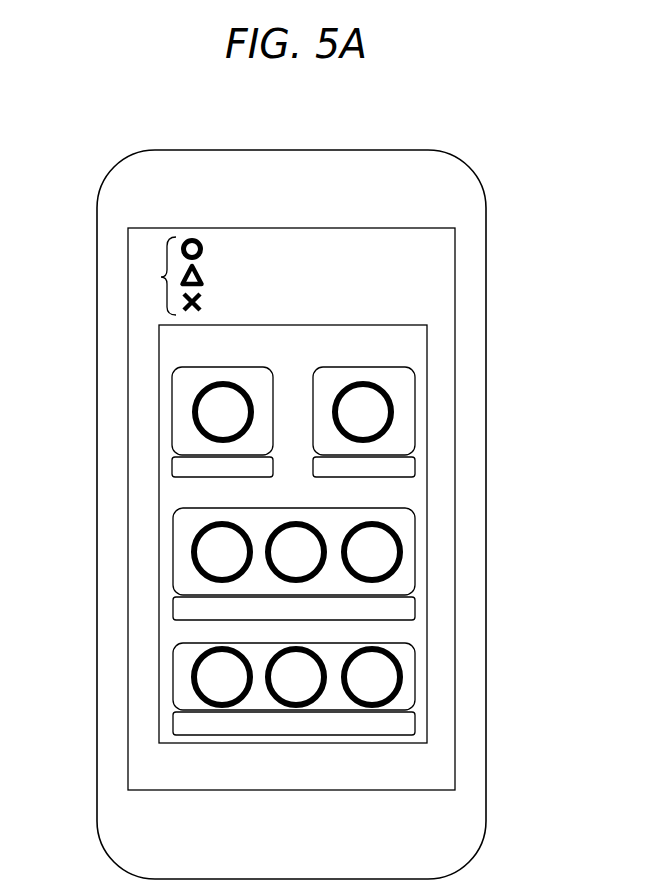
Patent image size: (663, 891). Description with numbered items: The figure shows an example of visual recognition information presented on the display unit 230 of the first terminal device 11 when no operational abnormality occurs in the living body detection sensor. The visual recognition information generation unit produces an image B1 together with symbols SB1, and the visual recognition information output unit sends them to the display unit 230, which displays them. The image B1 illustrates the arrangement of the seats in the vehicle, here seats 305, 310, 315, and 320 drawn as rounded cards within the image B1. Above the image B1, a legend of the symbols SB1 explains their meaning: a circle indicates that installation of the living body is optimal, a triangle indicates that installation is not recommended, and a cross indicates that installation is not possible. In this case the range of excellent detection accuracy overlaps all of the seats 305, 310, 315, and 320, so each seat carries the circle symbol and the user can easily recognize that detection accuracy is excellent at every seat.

The first terminal device 11 is at (455, 133).
The display unit 230 is at (418, 226).
The symbols SB1 is at (165, 278).
The image B1 is at (430, 343).
The seat 310 is at (172, 430).
The seat 305 is at (415, 397).
The seat 315 is at (415, 552).
The seat 320 is at (415, 676).